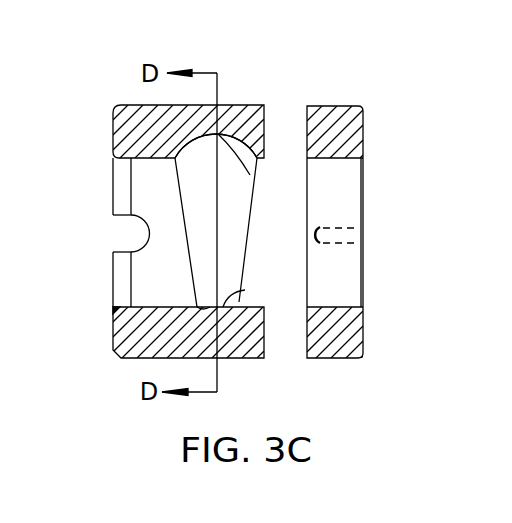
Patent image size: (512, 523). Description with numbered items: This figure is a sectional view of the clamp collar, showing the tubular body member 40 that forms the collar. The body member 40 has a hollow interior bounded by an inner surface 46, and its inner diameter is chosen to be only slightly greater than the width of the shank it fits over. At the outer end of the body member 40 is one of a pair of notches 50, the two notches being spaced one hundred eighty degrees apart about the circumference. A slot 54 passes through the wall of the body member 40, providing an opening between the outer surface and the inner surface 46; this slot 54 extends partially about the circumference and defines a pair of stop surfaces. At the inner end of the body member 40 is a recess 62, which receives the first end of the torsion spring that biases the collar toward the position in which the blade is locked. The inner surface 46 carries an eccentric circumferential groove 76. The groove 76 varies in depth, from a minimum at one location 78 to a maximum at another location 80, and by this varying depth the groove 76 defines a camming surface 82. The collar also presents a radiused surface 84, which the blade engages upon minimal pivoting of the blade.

The tubular body member 40 is at (243, 118).
The slot 54 is at (285, 123).
The inner surface 46 is at (155, 171).
The notch 50 is at (123, 231).
The eccentric circumferential groove 76 is at (190, 265).
The radiused surface 84 is at (113, 303).
The maximum depth of groove 80 is at (264, 174).
The camming surface 82 is at (235, 196).
The minimum depth of groove 78 is at (245, 290).
The recess 62 is at (345, 234).